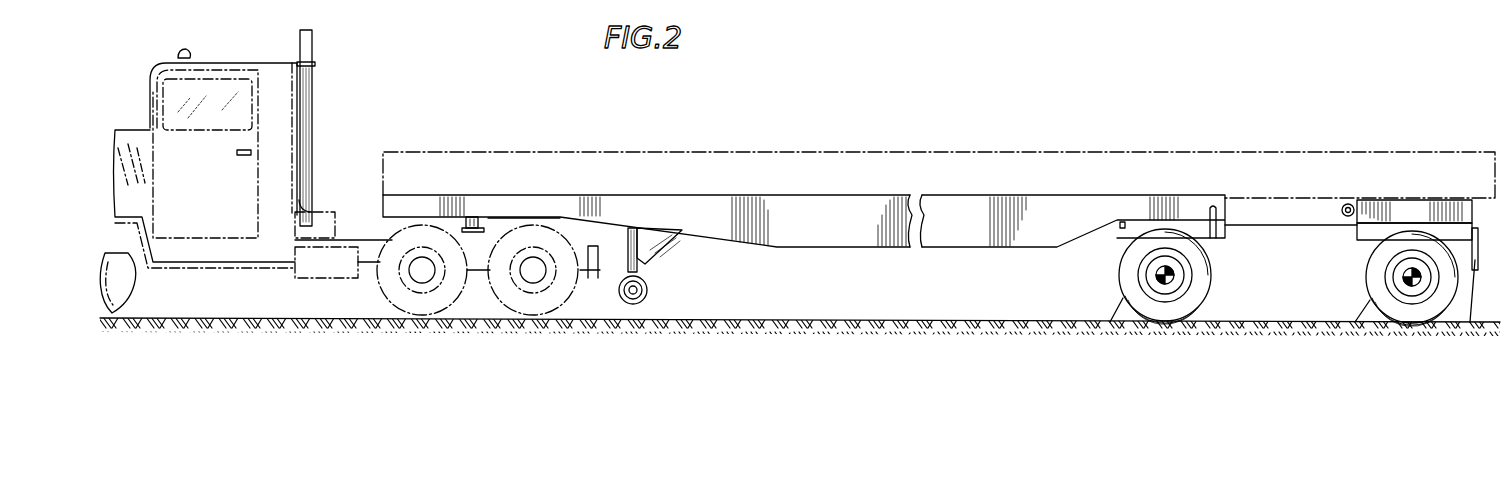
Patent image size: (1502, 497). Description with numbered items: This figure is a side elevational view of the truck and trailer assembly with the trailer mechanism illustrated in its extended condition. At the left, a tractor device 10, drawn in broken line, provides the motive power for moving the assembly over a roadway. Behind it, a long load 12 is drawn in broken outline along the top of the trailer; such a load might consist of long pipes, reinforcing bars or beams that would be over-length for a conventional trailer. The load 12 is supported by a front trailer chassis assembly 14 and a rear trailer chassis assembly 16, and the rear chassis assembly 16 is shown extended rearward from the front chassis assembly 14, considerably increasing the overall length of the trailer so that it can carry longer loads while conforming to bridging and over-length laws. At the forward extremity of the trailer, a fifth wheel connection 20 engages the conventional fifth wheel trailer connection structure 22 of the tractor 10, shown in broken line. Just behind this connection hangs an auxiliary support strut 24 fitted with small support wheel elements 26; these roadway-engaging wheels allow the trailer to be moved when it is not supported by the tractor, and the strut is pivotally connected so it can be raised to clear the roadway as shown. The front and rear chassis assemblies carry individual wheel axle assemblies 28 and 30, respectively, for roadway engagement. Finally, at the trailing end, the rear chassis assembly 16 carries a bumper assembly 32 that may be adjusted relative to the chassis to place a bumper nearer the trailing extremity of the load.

The tractor device 10 is at (318, 89).
The long load 12 is at (631, 150).
The front trailer chassis assembly 14 is at (793, 196).
The rear trailer chassis assembly 16 is at (1401, 199).
The fifth wheel connection 20 is at (470, 215).
The fifth wheel trailer connection structure 22 is at (507, 217).
The auxiliary support strut 24 is at (627, 262).
The support wheel elements 26 is at (647, 299).
The wheel axle assembly 28 is at (1119, 297).
The wheel axle assembly 30 is at (1366, 299).
The bumper assembly 32 is at (1475, 272).